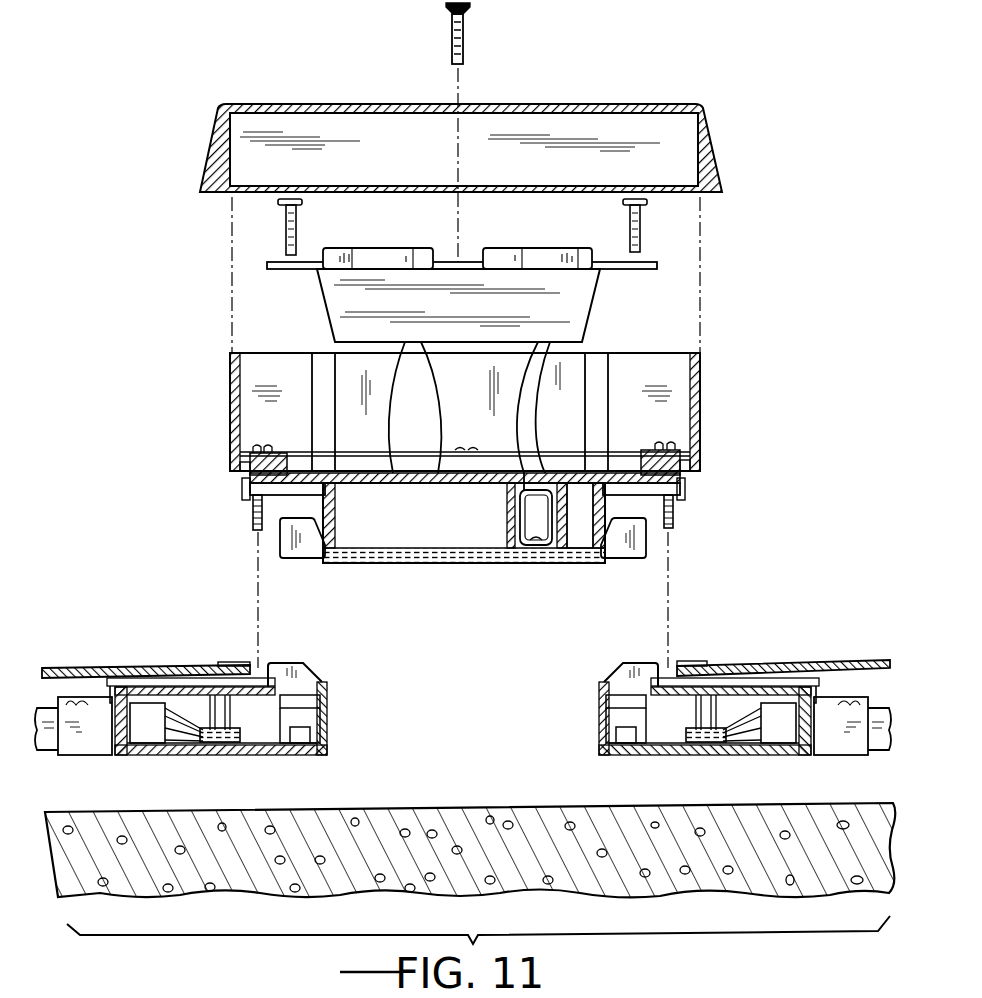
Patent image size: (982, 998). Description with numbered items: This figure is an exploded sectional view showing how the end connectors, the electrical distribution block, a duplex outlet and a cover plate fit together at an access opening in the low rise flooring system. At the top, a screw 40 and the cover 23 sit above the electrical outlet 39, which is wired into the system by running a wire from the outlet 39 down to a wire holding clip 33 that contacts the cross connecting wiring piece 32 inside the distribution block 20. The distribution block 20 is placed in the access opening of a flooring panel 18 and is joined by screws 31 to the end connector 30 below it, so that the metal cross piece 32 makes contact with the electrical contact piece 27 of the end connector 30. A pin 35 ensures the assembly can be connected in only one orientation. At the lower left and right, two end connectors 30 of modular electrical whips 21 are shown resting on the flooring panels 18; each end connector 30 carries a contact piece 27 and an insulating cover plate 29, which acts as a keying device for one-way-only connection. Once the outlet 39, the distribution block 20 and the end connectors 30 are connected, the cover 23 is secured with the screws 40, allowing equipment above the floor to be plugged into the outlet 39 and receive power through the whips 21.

The flooring panel 18 is at (93, 668).
The distribution block 20 is at (700, 413).
The modular electrical whip 21 is at (42, 748).
The cover 23 is at (720, 166).
The electrical contact piece 27 is at (322, 710).
The insulating cover plate 29 is at (292, 682).
The end connector 30 is at (226, 756).
The screw 31 is at (247, 527).
The cross connecting wiring piece 32 is at (637, 555).
The wire holding clip 33 is at (543, 477).
The pin 35 is at (247, 489).
The electrical outlet 39 is at (590, 305).
The screw 40 is at (464, 42).